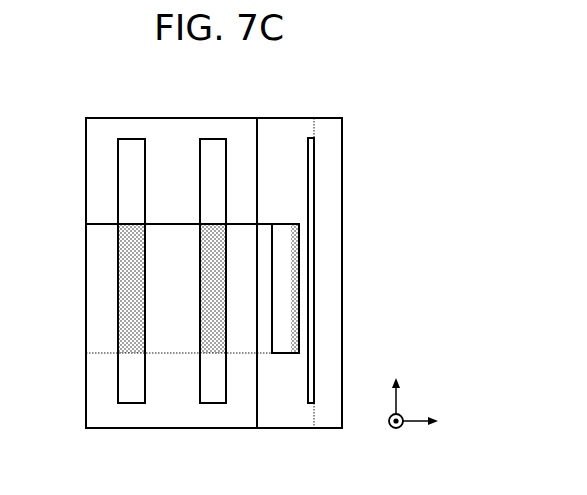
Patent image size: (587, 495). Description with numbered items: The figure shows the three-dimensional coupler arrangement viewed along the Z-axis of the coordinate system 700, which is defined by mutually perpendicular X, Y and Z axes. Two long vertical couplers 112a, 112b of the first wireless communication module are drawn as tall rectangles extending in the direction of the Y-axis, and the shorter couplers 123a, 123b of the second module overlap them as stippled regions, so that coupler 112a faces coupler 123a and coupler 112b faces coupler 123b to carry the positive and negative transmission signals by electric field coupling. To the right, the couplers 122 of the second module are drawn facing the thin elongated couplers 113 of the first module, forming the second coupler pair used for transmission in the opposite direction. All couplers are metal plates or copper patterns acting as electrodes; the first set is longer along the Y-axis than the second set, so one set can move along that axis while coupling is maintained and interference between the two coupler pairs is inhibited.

The coupler 112a is at (135, 133).
The coupler 112b is at (216, 133).
The coupler 113 is at (310, 186).
The coupler 122 is at (300, 262).
The coupler 123a is at (121, 261).
The coupler 123b is at (199, 325).
The coordinate system 700 is at (416, 403).